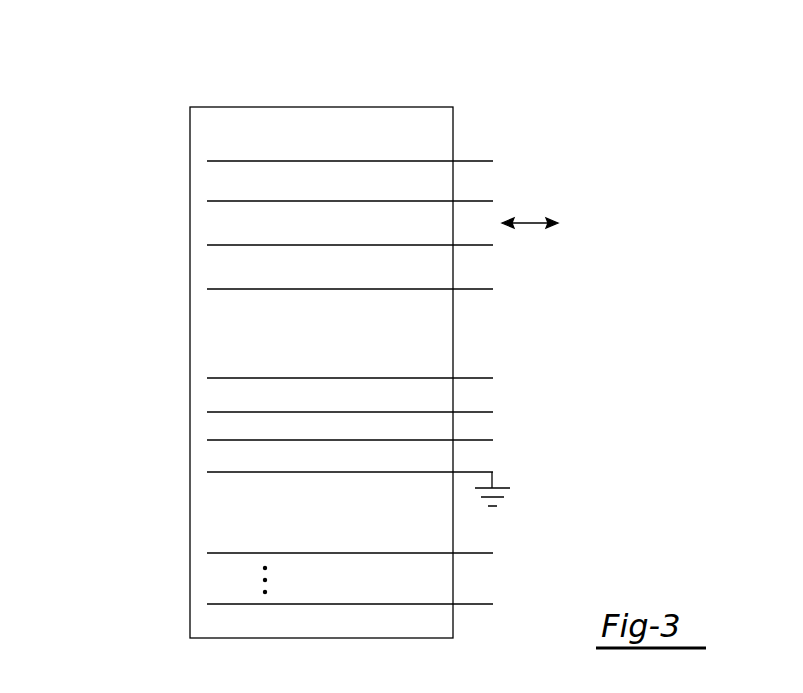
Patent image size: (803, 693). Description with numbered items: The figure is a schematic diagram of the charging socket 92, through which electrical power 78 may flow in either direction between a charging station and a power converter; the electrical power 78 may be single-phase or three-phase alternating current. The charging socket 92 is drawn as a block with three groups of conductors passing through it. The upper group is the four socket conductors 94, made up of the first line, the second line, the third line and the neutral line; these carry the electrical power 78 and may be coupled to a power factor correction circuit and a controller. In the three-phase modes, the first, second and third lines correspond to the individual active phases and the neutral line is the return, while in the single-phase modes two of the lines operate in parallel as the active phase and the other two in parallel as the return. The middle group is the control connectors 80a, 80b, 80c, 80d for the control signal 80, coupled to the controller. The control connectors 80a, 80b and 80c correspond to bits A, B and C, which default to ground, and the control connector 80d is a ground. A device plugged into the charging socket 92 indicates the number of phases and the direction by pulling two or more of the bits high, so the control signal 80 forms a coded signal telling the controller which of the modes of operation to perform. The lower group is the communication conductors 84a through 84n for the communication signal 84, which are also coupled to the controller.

The charging socket 92 is at (322, 107).
The electrical power 78 is at (530, 221).
The four socket conductors 94 is at (115, 143).
The control signal 80 is at (115, 352).
The control connector 80a is at (492, 378).
The control connector 80b is at (492, 412).
The control connector 80c is at (492, 440).
The control connector 80d is at (488, 472).
The communication signal 84 is at (115, 538).
The communication conductor 84a is at (492, 553).
The communication conductor 84n is at (492, 604).